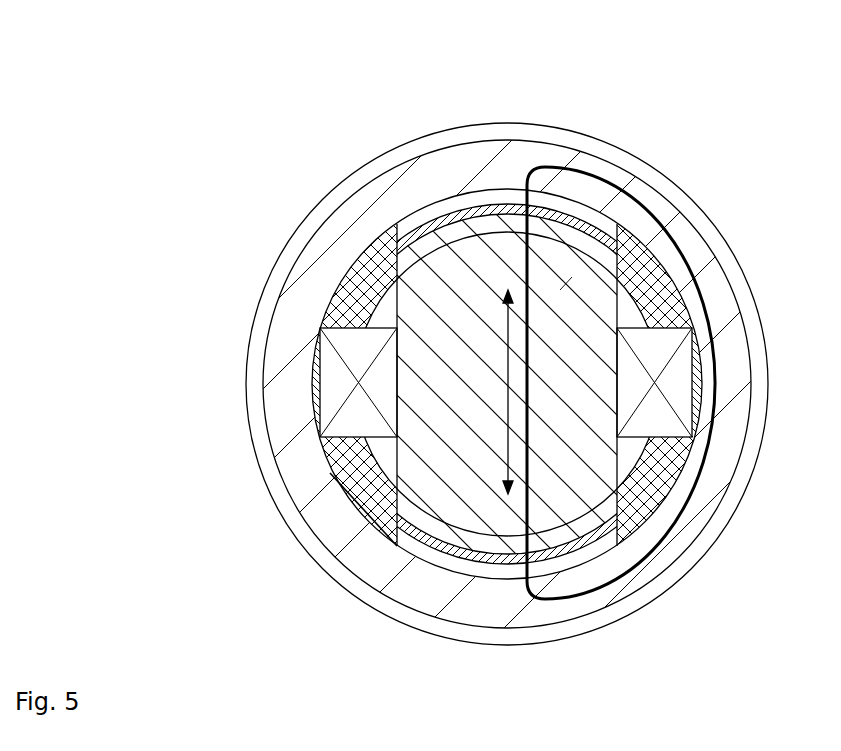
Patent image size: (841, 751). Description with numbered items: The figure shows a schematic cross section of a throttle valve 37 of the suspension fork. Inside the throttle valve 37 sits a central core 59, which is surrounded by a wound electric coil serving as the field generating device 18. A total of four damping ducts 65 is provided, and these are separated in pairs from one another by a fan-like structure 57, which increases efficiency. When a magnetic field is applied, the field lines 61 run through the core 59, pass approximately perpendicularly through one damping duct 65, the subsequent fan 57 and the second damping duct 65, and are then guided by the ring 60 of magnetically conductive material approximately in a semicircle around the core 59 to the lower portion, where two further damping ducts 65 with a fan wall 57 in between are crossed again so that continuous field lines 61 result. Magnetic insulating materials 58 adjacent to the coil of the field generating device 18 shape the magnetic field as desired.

The field generating device 18 is at (677, 386).
The throttle valve 37 is at (240, 335).
The fan-like structure 57 is at (497, 190).
The magnetic insulating materials 58 is at (345, 287).
The central core 59 is at (572, 277).
The ring 60 is at (635, 198).
The field lines 61 is at (495, 318).
The damping ducts 65 is at (447, 238).